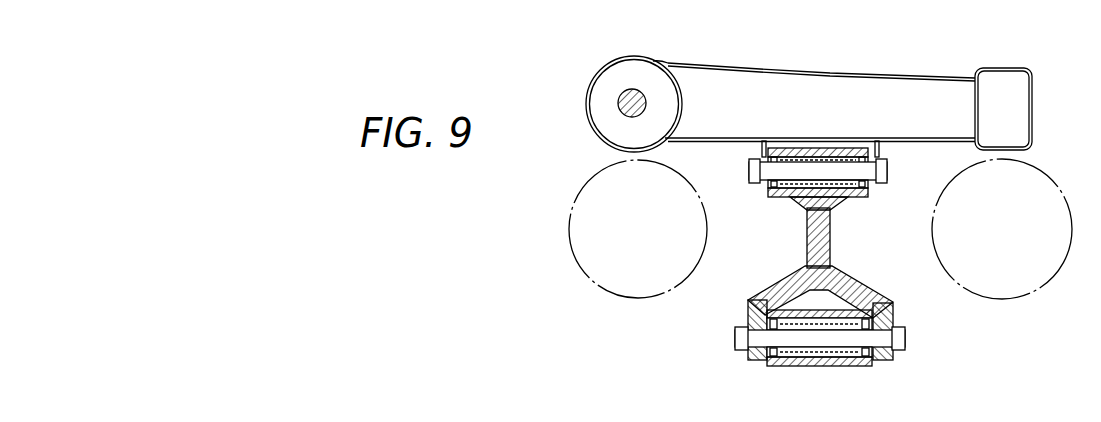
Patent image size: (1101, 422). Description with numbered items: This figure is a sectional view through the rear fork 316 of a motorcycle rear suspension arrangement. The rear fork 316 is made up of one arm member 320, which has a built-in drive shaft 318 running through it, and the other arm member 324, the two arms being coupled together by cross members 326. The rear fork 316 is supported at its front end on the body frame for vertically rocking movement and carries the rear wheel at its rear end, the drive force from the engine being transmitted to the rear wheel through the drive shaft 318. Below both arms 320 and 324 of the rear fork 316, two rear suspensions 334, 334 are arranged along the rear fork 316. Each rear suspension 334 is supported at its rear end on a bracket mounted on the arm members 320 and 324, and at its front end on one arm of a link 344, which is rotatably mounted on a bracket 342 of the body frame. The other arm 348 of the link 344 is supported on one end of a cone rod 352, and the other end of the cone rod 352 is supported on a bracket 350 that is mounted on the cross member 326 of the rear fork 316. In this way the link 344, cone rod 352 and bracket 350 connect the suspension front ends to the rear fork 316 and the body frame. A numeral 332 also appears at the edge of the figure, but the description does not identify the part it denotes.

The rear fork 316 is at (814, 77).
The drive shaft 318 is at (619, 101).
The arm member 320 is at (629, 56).
The arm member 324 is at (1013, 80).
The cross member 326 is at (877, 87).
The frame member 332 is at (555, 4).
The rear suspension 334 is at (638, 296).
The bracket 342 is at (327, 4).
The link 344 is at (462, 0).
The arm of the link 348 is at (818, 361).
The bracket 350 is at (757, 153).
The cone rod 352 is at (826, 238).